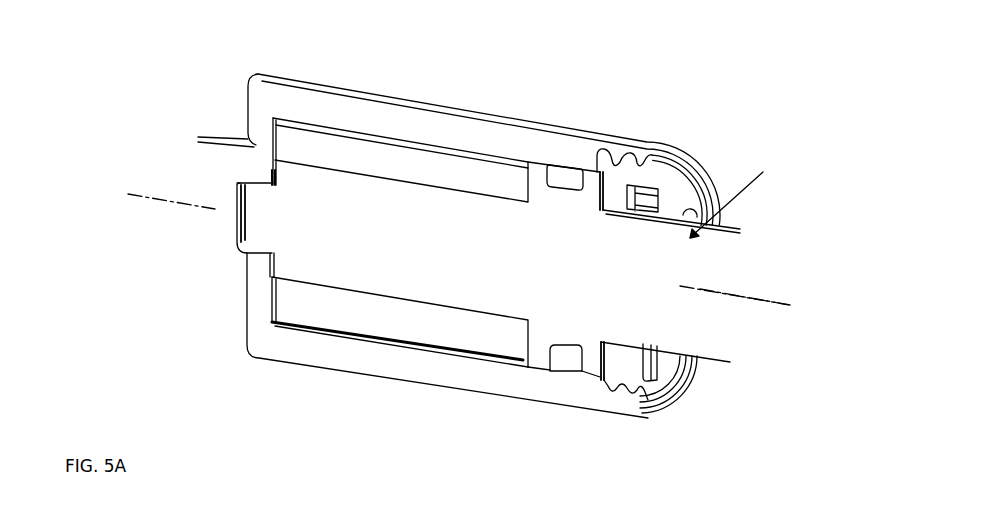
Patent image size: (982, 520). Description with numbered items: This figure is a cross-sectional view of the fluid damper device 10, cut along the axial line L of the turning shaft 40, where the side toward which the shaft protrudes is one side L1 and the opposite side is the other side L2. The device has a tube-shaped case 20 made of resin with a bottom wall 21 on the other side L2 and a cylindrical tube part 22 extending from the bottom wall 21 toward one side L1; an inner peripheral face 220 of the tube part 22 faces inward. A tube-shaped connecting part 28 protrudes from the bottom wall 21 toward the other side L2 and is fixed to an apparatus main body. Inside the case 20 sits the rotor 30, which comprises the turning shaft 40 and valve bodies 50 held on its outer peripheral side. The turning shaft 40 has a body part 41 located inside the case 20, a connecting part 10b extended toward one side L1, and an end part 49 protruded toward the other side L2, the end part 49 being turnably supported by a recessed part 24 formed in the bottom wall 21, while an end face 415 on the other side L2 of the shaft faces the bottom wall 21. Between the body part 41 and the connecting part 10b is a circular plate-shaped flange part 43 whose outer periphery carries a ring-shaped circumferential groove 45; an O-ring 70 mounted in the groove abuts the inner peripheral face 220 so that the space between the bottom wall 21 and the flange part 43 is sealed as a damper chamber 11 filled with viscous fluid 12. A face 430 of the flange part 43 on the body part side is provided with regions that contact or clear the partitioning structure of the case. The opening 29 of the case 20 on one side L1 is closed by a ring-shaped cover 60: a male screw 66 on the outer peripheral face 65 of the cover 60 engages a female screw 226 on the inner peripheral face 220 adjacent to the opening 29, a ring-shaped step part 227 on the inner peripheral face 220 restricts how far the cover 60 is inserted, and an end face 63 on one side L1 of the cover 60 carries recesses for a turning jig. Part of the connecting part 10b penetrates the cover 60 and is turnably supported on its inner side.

The fluid damper device 10 is at (653, 77).
The connecting part 10b is at (718, 352).
The case 20 is at (561, 113).
The bottom wall 21 is at (252, 141).
The tube part 22 is at (431, 100).
The inner peripheral face 220 is at (480, 150).
The step part 227 is at (597, 150).
The opening 29 is at (682, 170).
The rotor 30 is at (735, 194).
The damper chamber 11 is at (400, 235).
The fluid 12 is at (346, 128).
The valve body 50 is at (418, 175).
The end face 415 is at (277, 175).
The turning shaft 40 is at (452, 310).
The body part 41 is at (338, 292).
The face 430 is at (527, 358).
The flange part 43 is at (548, 380).
The circumferential groove 45 is at (562, 345).
The O-ring 70 is at (575, 356).
The female screw 226 is at (625, 405).
The male screw 66 is at (618, 426).
The outer peripheral face 65 is at (620, 393).
The end face 63 is at (663, 378).
The cover 60 is at (684, 360).
The recessed part 24 is at (243, 260).
The end part 49 is at (255, 262).
The connecting part 28 is at (206, 279).
The axial line L is at (735, 291).
The one side L1 is at (758, 302).
The other side L2 is at (159, 194).